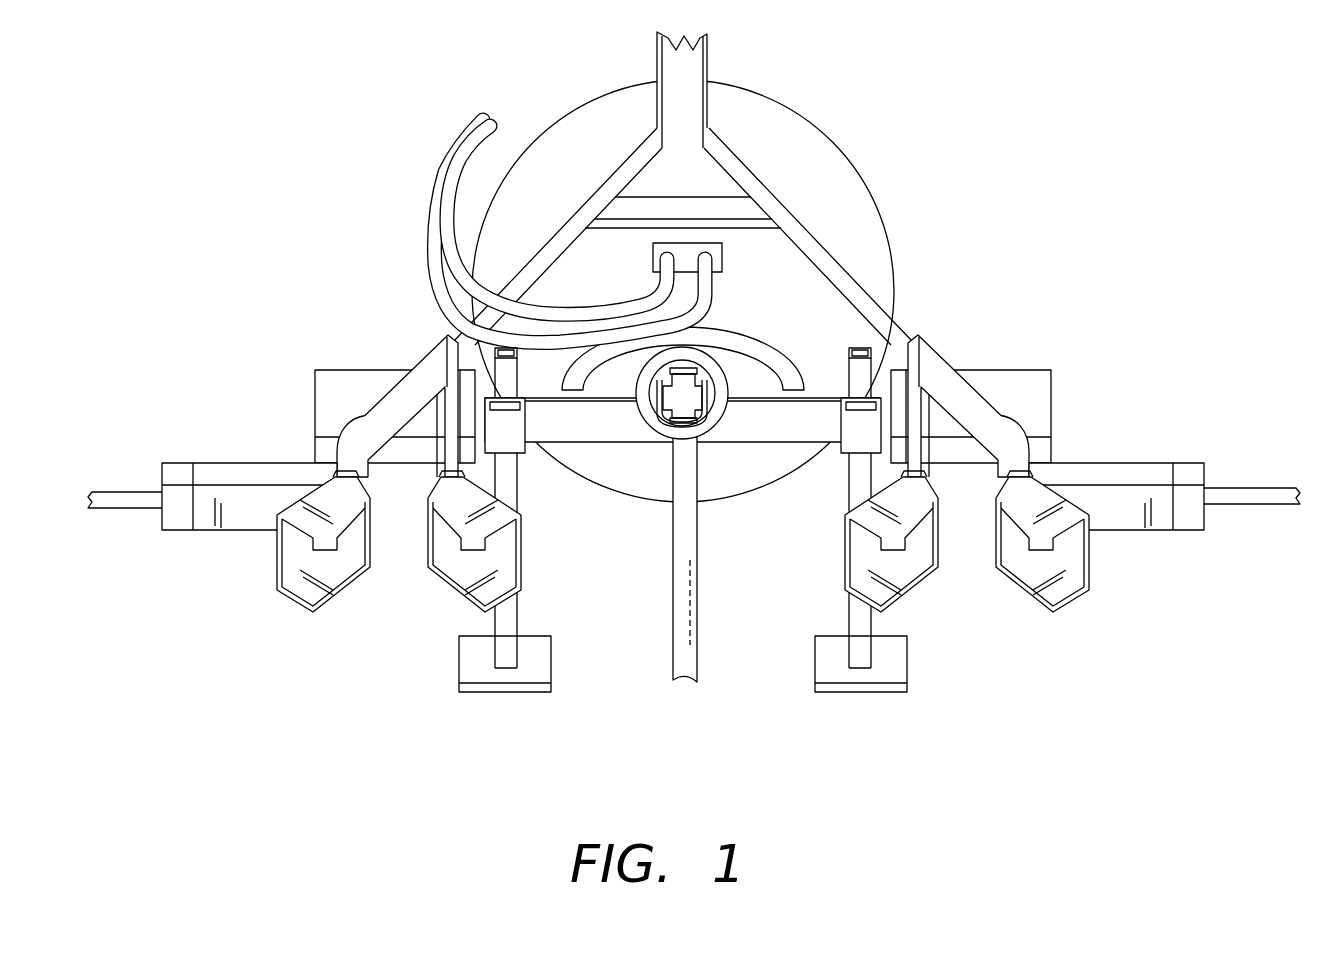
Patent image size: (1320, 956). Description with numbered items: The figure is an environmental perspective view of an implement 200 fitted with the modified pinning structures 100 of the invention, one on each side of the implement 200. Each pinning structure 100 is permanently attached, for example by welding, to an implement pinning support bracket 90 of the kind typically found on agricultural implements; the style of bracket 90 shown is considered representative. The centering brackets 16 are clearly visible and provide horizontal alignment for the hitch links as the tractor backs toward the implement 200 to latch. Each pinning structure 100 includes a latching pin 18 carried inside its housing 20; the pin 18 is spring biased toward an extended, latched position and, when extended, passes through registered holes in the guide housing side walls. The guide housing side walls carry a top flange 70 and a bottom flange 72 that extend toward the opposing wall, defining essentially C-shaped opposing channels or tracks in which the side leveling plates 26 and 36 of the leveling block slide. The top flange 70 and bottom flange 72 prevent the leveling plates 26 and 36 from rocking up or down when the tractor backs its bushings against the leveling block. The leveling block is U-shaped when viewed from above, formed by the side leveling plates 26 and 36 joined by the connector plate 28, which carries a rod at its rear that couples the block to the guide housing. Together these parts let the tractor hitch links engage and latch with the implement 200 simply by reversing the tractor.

The centering bracket 16 is at (307, 595).
The latching pin 18 is at (118, 510).
The latching pin housing 20 is at (252, 467).
The side leveling plate 26 is at (442, 522).
The connector plate 28 is at (413, 483).
The side leveling plate 36 is at (357, 522).
The top flange 70 is at (437, 453).
The bottom flange 72 is at (427, 528).
The implement pinning support bracket 90 is at (400, 385).
The modified pinning structure 100 is at (176, 642).
The implement 200 is at (585, 704).